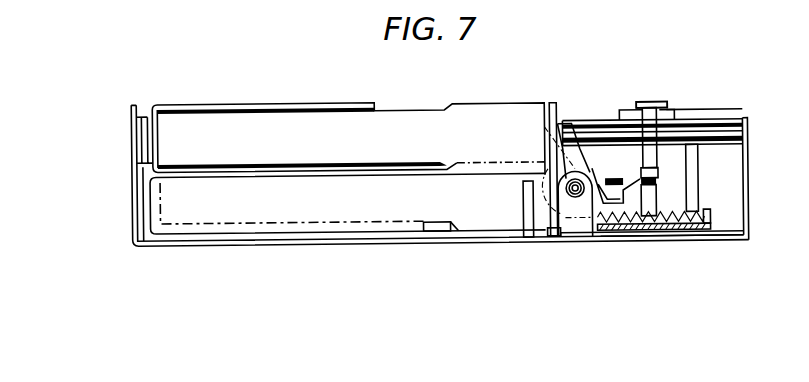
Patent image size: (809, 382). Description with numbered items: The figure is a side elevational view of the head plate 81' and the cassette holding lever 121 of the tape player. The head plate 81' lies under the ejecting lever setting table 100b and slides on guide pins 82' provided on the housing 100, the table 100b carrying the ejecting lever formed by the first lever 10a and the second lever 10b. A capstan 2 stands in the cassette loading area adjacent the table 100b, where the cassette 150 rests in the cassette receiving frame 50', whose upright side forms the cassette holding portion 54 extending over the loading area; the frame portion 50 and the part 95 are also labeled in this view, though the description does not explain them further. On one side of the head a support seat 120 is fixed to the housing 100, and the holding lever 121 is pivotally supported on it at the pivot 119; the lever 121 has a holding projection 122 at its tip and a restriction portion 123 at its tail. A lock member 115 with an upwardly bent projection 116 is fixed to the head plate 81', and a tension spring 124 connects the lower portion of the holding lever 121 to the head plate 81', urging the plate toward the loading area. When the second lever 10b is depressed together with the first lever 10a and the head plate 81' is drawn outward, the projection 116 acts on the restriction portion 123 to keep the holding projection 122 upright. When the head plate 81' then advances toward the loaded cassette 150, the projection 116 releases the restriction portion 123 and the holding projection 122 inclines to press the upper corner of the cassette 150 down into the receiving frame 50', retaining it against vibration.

The capstan 2 is at (526, 224).
The first lever 10a is at (671, 111).
The second lever 10b is at (740, 123).
The lower carriage member 50 is at (348, 203).
The cassette receiving frame 50' is at (292, 222).
The cassette holding portion 54 is at (300, 105).
The head plate 81' is at (652, 247).
The guide pins 82' is at (737, 177).
The plate 95 is at (744, 138).
The housing 100 is at (264, 243).
The ejecting lever setting table 100b is at (727, 146).
The lock member 115 is at (660, 172).
The projection 116 is at (616, 178).
The pivot 119 is at (523, 191).
The support seat 120 is at (579, 230).
The holding lever 121 is at (625, 178).
The holding projection 122 is at (560, 140).
The restriction portion 123 is at (707, 215).
The tension spring 124 is at (694, 243).
The cassette 150 is at (419, 124).